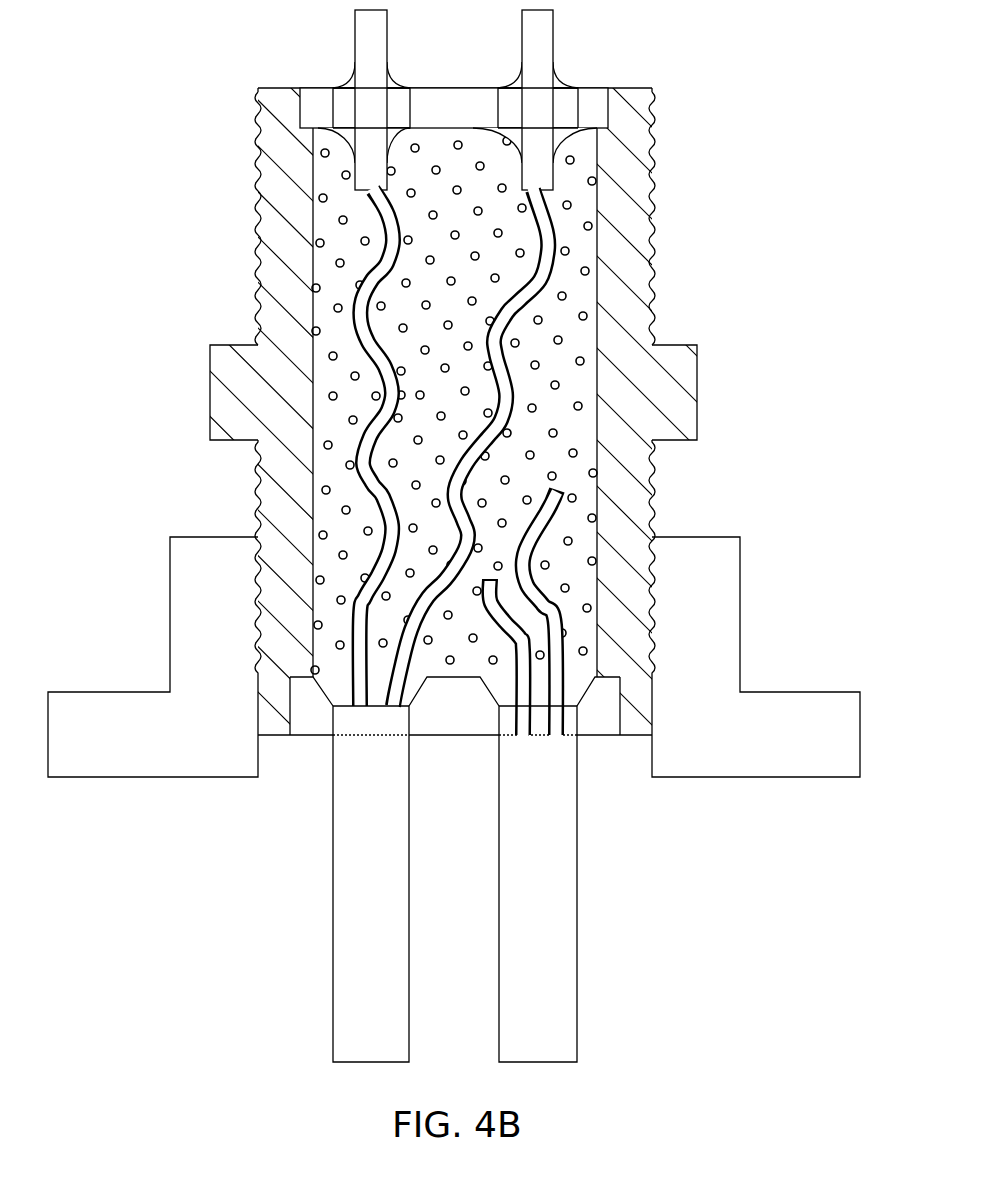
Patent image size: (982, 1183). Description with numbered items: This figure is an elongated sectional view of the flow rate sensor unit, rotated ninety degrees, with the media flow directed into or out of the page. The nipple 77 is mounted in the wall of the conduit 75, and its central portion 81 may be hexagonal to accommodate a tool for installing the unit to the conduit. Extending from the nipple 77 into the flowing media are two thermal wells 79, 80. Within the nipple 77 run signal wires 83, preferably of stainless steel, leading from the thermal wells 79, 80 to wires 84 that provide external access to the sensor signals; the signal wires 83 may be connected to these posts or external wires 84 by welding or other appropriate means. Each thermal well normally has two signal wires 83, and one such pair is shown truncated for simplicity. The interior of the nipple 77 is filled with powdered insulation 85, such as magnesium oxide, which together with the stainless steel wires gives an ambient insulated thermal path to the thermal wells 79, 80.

The conduit 75 is at (90, 777).
The nipple 77 is at (680, 258).
The thermal well 79 is at (577, 995).
The thermal well 80 is at (333, 995).
The central portion 81 is at (697, 394).
The signal wires 83 is at (383, 268).
The wires 84 is at (355, 42).
The powdered insulation 85 is at (578, 346).